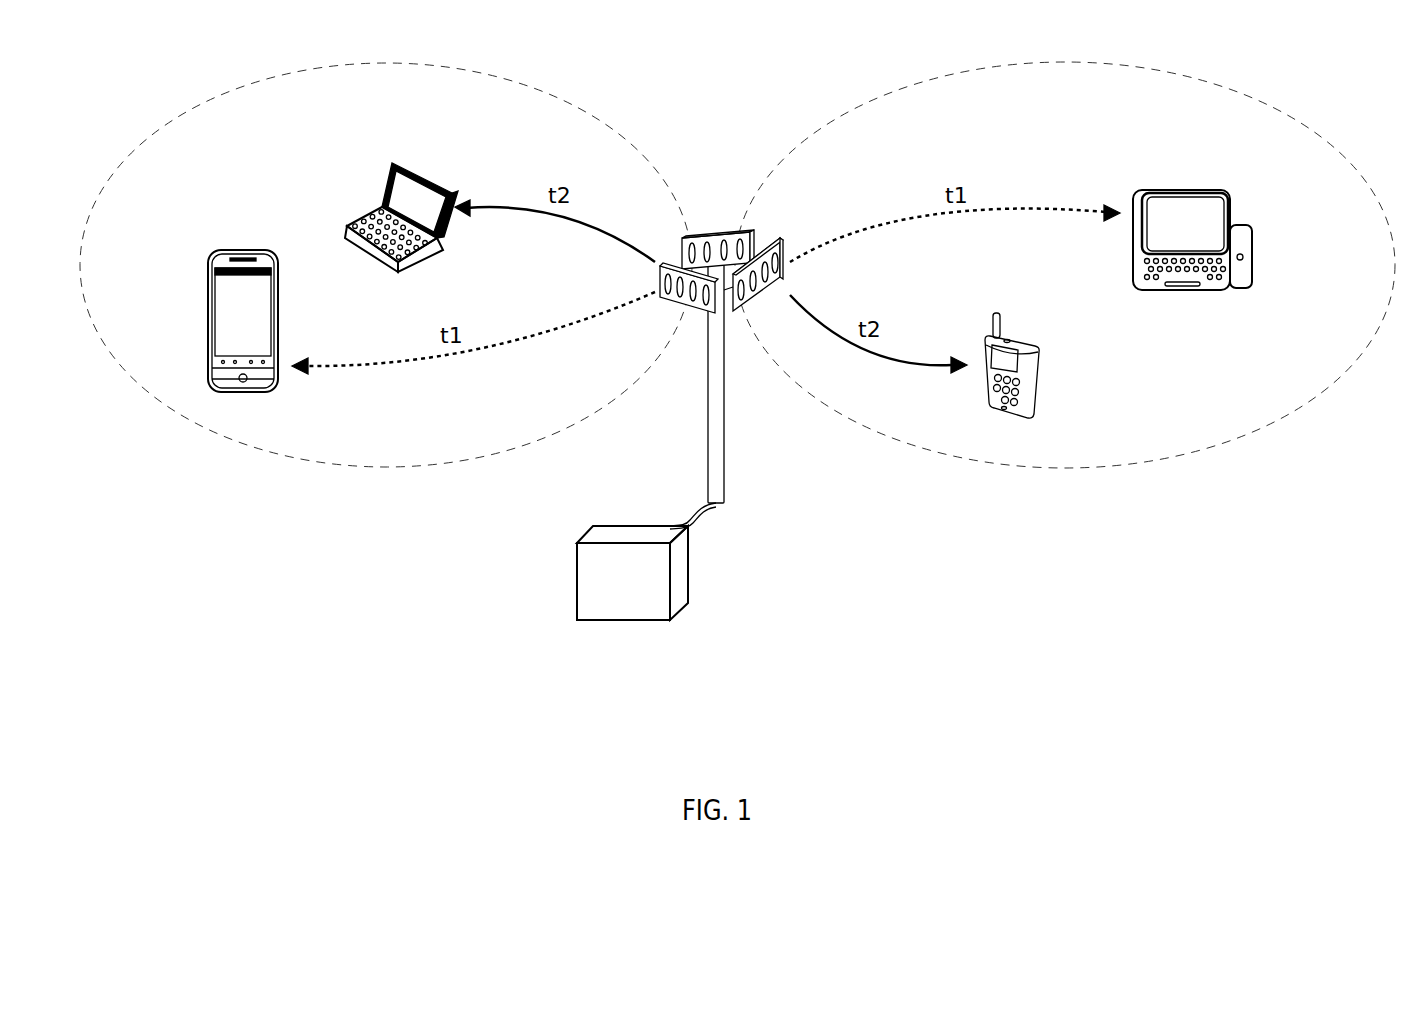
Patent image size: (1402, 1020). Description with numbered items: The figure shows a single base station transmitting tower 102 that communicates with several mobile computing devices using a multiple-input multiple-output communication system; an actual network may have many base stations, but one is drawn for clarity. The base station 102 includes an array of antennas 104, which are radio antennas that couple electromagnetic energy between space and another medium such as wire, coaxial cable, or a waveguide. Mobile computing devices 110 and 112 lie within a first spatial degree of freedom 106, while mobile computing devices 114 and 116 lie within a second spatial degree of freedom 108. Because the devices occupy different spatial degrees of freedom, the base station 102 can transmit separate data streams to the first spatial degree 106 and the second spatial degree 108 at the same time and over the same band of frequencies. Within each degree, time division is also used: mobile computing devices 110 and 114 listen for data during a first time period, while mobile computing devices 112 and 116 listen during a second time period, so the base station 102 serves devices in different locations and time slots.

The base station 102 is at (545, 568).
The array of antennas 104 is at (719, 208).
The first spatial degree of freedom 106 is at (164, 120).
The second spatial degree of freedom 108 is at (812, 116).
The mobile computing device 110 is at (208, 270).
The mobile computing device 112 is at (360, 216).
The mobile computing device 114 is at (1136, 195).
The mobile computing device 116 is at (985, 337).